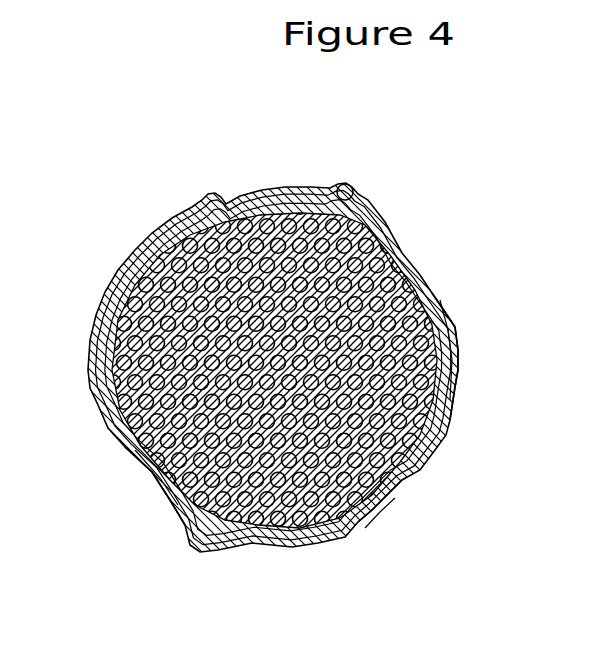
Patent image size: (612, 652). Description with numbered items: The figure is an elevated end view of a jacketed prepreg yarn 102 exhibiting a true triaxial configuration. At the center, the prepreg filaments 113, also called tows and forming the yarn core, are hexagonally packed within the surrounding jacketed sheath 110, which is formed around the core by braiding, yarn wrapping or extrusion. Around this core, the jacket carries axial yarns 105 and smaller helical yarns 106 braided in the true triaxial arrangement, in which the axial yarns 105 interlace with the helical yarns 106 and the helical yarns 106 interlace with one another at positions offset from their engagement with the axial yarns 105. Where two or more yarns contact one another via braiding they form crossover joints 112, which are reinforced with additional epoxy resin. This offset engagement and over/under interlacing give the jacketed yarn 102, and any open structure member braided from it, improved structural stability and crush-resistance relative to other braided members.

The prepreg yarn 102 is at (148, 112).
The prepreg filaments 113 is at (138, 337).
The crossover joints 112 is at (355, 195).
The axial yarns 105 is at (442, 298).
The helical yarns 106 is at (145, 465).
The thermoplastic sheath 110 is at (388, 492).